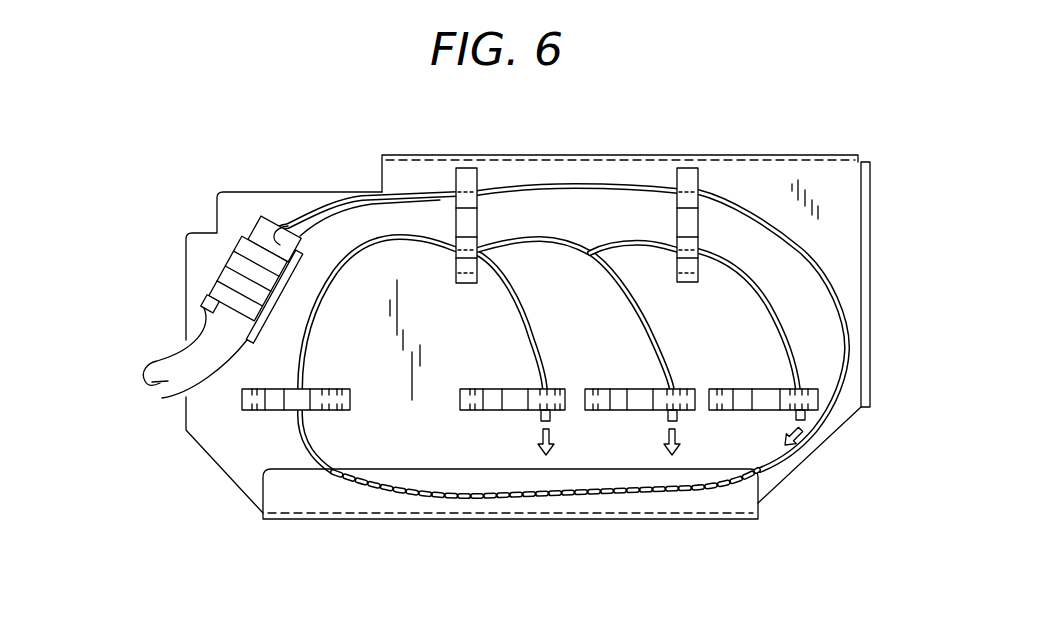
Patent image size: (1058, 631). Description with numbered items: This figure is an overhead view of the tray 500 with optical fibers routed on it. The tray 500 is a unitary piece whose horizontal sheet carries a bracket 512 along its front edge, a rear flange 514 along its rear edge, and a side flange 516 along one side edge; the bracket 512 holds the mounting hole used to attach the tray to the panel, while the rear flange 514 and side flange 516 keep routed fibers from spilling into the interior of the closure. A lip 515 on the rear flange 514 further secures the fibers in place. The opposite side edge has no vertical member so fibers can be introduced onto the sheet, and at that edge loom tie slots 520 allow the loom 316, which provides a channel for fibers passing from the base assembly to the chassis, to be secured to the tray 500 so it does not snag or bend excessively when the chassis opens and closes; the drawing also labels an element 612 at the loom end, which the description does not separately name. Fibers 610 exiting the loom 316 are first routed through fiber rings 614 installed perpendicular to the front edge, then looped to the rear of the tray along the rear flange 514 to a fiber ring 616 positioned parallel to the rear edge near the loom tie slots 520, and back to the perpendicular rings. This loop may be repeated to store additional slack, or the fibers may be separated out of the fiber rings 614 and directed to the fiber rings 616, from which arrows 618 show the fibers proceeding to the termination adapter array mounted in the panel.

The tray 500 is at (846, 138).
The bracket 512 is at (583, 155).
The rear flange 514 is at (328, 495).
The lip 515 is at (280, 495).
The side flange 516 is at (871, 284).
The loom tie slots 520 is at (297, 208).
The fibers 610 is at (340, 192).
The connector body 612 is at (242, 240).
The fiber rings 614 is at (466, 185).
The fiber rings 616 is at (460, 395).
The arrows 618 is at (783, 443).
The loom 316 is at (157, 384).